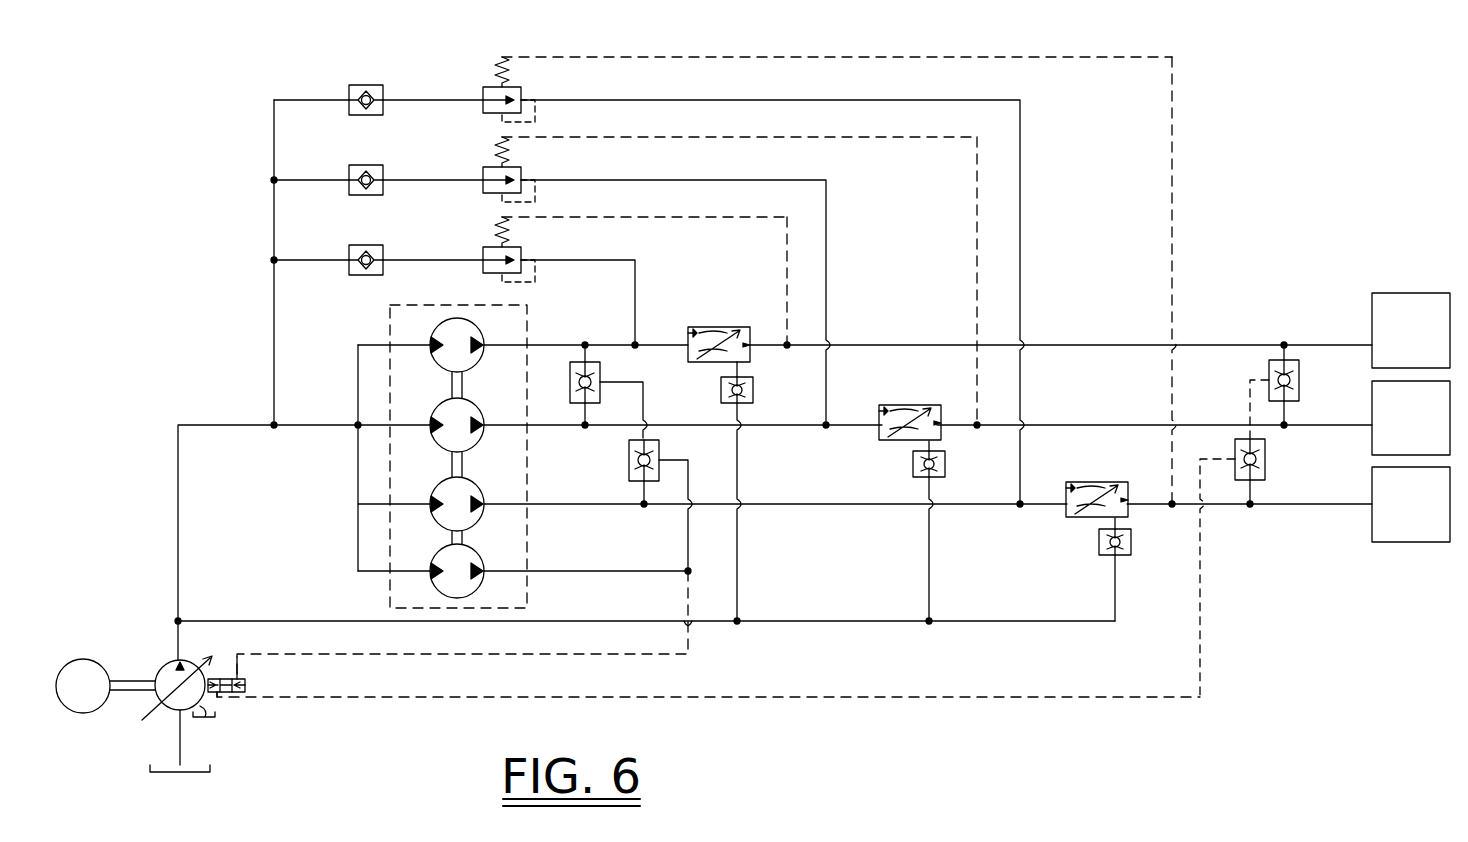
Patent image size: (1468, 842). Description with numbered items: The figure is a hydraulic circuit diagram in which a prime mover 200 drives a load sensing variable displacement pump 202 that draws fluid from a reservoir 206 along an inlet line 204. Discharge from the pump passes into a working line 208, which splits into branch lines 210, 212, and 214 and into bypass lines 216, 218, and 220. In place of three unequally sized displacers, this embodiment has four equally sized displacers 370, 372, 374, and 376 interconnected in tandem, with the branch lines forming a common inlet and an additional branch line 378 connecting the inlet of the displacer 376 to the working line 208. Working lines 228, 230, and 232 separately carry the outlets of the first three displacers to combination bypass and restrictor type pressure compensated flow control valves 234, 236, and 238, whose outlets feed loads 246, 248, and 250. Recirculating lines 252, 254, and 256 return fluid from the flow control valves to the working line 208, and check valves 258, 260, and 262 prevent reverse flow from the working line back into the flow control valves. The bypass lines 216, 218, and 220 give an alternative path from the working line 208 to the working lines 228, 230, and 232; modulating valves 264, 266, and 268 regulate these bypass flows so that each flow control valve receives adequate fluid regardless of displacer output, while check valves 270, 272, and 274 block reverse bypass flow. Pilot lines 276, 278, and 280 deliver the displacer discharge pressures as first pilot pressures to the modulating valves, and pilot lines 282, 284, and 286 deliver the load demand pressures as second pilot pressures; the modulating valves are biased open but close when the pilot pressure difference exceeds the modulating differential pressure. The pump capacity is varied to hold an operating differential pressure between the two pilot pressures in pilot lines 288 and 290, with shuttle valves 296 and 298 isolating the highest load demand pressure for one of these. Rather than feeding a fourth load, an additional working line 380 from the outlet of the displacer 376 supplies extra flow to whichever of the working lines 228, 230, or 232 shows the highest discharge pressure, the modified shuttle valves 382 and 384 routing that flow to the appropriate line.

The prime mover 200 is at (93, 659).
The load sensing variable displacement pump 202 is at (175, 708).
The inlet line 204 is at (182, 735).
The reservoir 206 is at (205, 766).
The working line 208 is at (178, 496).
The branch line 210 is at (358, 345).
The branch line 212 is at (358, 425).
The branch line 214 is at (358, 504).
The bypass line 216 is at (636, 275).
The bypass line 218 is at (828, 235).
The bypass line 220 is at (1022, 235).
The working line 228 is at (540, 345).
The working line 230 is at (855, 425).
The working line 232 is at (855, 504).
The flow control valve 234 is at (737, 327).
The flow control valve 236 is at (892, 410).
The flow control valve 238 is at (1107, 482).
The load 246 is at (1372, 298).
The load 248 is at (1372, 410).
The load 250 is at (1372, 525).
The recirculating line 252 is at (738, 578).
The recirculating line 254 is at (930, 578).
The recirculating line 256 is at (1030, 622).
The check valve 258 is at (754, 391).
The check valve 260 is at (946, 462).
The check valve 262 is at (1134, 556).
The modulating valve 264 is at (483, 256).
The modulating valve 266 is at (483, 176).
The modulating valve 268 is at (483, 92).
The check valve 270 is at (352, 258).
The check valve 272 is at (352, 178).
The check valve 274 is at (352, 96).
The pilot line 276 is at (537, 278).
The pilot line 278 is at (739, 176).
The pilot line 280 is at (537, 122).
The pilot line 282 is at (787, 300).
The pilot line 284 is at (977, 292).
The pilot line 286 is at (1174, 253).
The pilot line 288 is at (612, 655).
The pilot line 290 is at (945, 695).
The shuttle valve 296 is at (1302, 373).
The shuttle valve 298 is at (1268, 462).
The displacer 370 is at (455, 318).
The displacer 372 is at (445, 415).
The displacer 374 is at (445, 492).
The displacer 376 is at (445, 563).
The motor inlet line 378 is at (358, 576).
The working line 380 is at (632, 571).
The shuttle valve 382 is at (602, 375).
The shuttle valve 384 is at (628, 472).